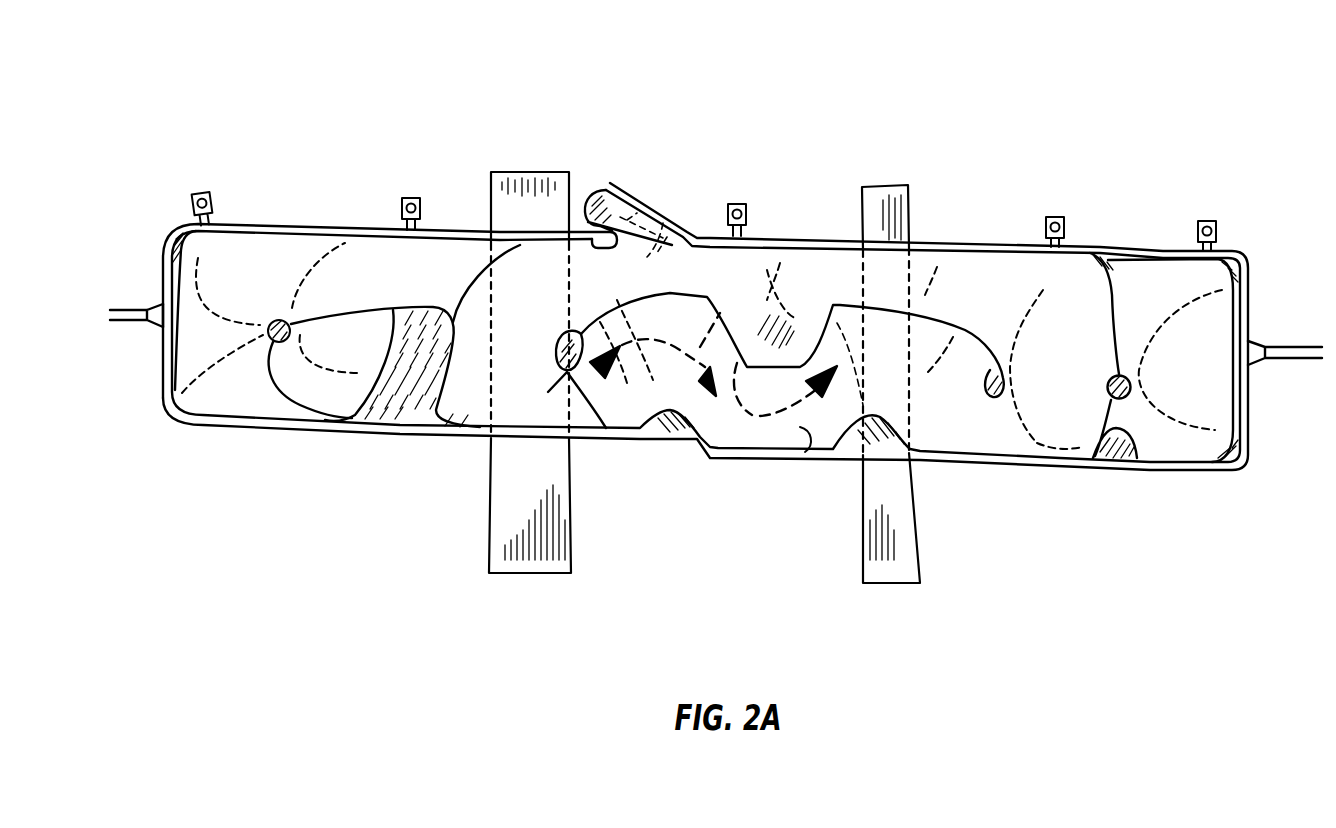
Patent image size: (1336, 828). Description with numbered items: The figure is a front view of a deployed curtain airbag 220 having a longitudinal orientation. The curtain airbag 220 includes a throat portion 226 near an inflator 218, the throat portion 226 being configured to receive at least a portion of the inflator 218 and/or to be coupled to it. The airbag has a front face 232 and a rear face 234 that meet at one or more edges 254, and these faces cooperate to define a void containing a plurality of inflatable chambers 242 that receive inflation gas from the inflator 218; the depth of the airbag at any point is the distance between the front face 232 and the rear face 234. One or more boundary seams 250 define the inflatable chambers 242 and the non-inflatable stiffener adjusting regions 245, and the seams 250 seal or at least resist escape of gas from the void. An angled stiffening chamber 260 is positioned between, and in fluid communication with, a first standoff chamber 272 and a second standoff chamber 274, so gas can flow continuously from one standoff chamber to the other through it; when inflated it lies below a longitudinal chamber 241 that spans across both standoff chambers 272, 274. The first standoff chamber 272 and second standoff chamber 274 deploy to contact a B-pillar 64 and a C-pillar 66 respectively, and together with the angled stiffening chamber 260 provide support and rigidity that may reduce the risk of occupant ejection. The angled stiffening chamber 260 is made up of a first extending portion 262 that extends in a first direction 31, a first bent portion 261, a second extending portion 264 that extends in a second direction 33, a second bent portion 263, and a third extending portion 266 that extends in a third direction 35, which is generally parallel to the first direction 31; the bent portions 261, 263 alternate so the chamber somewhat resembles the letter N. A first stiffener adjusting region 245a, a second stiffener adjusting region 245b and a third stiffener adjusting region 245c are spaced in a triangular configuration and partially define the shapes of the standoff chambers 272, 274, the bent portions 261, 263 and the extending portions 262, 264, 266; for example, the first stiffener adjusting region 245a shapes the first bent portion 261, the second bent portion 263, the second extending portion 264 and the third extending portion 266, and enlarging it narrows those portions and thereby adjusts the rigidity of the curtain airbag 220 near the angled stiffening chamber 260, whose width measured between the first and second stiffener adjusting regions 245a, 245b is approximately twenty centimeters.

The curtain airbag 220 is at (218, 458).
The boundary seams 250 is at (355, 310).
The stiffener adjusting regions 245 is at (935, 84).
The first stiffener adjusting region 245a is at (783, 333).
The second stiffener adjusting region 245b is at (654, 390).
The third stiffener adjusting region 245c is at (871, 415).
The front face 232 is at (183, 287).
The rear face 234 is at (240, 262).
The inflatable chambers 242 is at (274, 266).
The edges 254 is at (1234, 262).
The throat portion 226 is at (614, 185).
The inflator 218 is at (598, 192).
The C-pillar 66 is at (508, 478).
The B-pillar 64 is at (910, 545).
The angled stiffening chamber 260 is at (758, 428).
The first bent portion 261 is at (682, 400).
The first extending portion 262 is at (603, 360).
The second bent portion 263 is at (800, 427).
The second extending portion 264 is at (675, 410).
The first direction 31 is at (625, 383).
The second direction 33 is at (717, 382).
The third direction 35 is at (857, 427).
The longitudinal chamber 241 is at (768, 300).
The third extending portion 266 is at (823, 340).
The first standoff chamber 272 is at (893, 388).
The second standoff chamber 274 is at (518, 301).